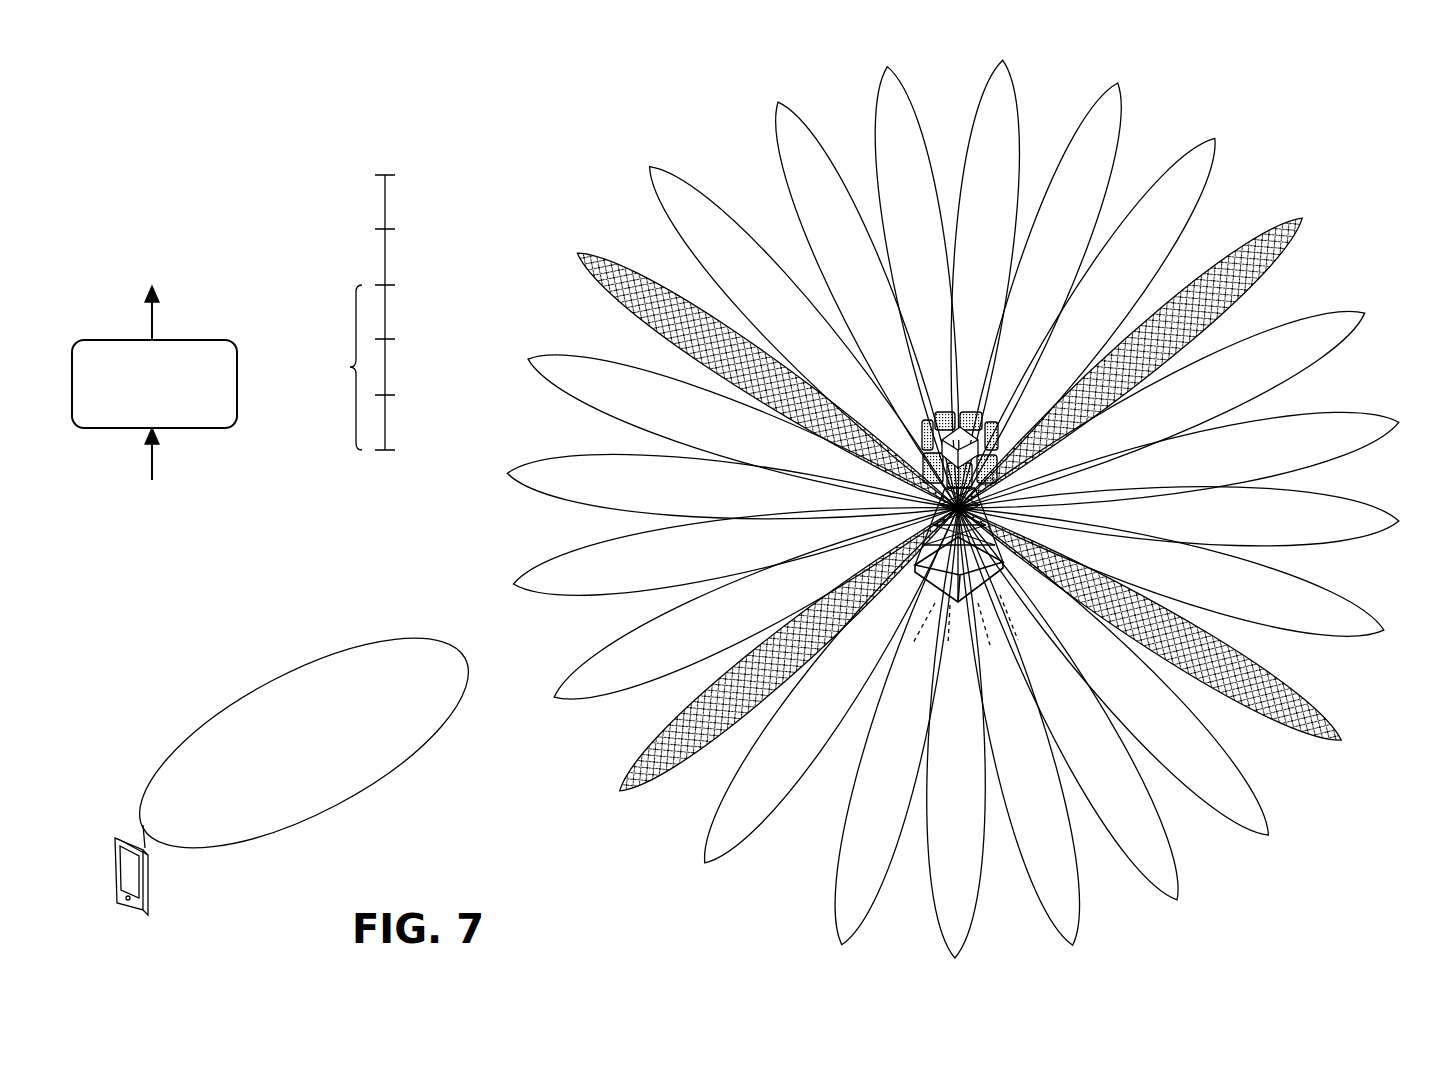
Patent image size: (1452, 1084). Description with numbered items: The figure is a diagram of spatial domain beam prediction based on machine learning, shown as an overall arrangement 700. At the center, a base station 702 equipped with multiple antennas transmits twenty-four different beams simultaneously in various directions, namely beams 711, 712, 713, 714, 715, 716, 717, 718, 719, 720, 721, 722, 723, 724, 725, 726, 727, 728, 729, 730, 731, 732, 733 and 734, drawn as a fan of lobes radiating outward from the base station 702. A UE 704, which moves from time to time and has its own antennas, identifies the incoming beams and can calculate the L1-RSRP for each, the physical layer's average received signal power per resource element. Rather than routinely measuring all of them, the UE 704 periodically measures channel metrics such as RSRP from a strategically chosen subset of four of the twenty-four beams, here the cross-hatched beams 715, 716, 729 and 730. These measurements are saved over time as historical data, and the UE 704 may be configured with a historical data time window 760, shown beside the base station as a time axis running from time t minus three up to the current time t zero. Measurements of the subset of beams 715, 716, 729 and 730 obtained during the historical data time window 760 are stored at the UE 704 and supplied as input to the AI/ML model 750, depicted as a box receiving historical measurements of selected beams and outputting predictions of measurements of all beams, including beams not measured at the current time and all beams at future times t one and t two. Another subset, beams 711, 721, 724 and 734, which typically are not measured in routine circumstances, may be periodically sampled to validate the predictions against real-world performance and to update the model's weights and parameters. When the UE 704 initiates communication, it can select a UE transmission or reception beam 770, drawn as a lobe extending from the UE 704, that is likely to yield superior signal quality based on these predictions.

The beam prediction system 700 is at (152, 110).
The base station 702 is at (943, 595).
The UE 704 is at (107, 876).
The beam 711 is at (1195, 465).
The beam 712 is at (1179, 525).
The beam 713 is at (1178, 410).
The beam 714 is at (1187, 576).
The beam 715 is at (1143, 360).
The beam 716 is at (1161, 631).
The beam 717 is at (1096, 311).
The beam 718 is at (1119, 682).
The beam 719 is at (1038, 288).
The beam 720 is at (1067, 713).
The beam 721 is at (980, 276).
The beam 722 is at (1015, 730).
The beam 723 is at (920, 277).
The beam 724 is at (943, 733).
The beam 725 is at (859, 299).
The beam 726 is at (888, 729).
The beam 727 is at (798, 331).
The beam 728 is at (824, 698).
The beam 729 is at (750, 379).
The beam 730 is at (770, 655).
The beam 731 is at (720, 433).
The beam 732 is at (750, 609).
The beam 733 is at (709, 490).
The beam 734 is at (711, 546).
The AI/ML model 750 is at (236, 420).
The historical data time window 760 is at (341, 313).
The UE transmission or reception beam 770 is at (370, 651).